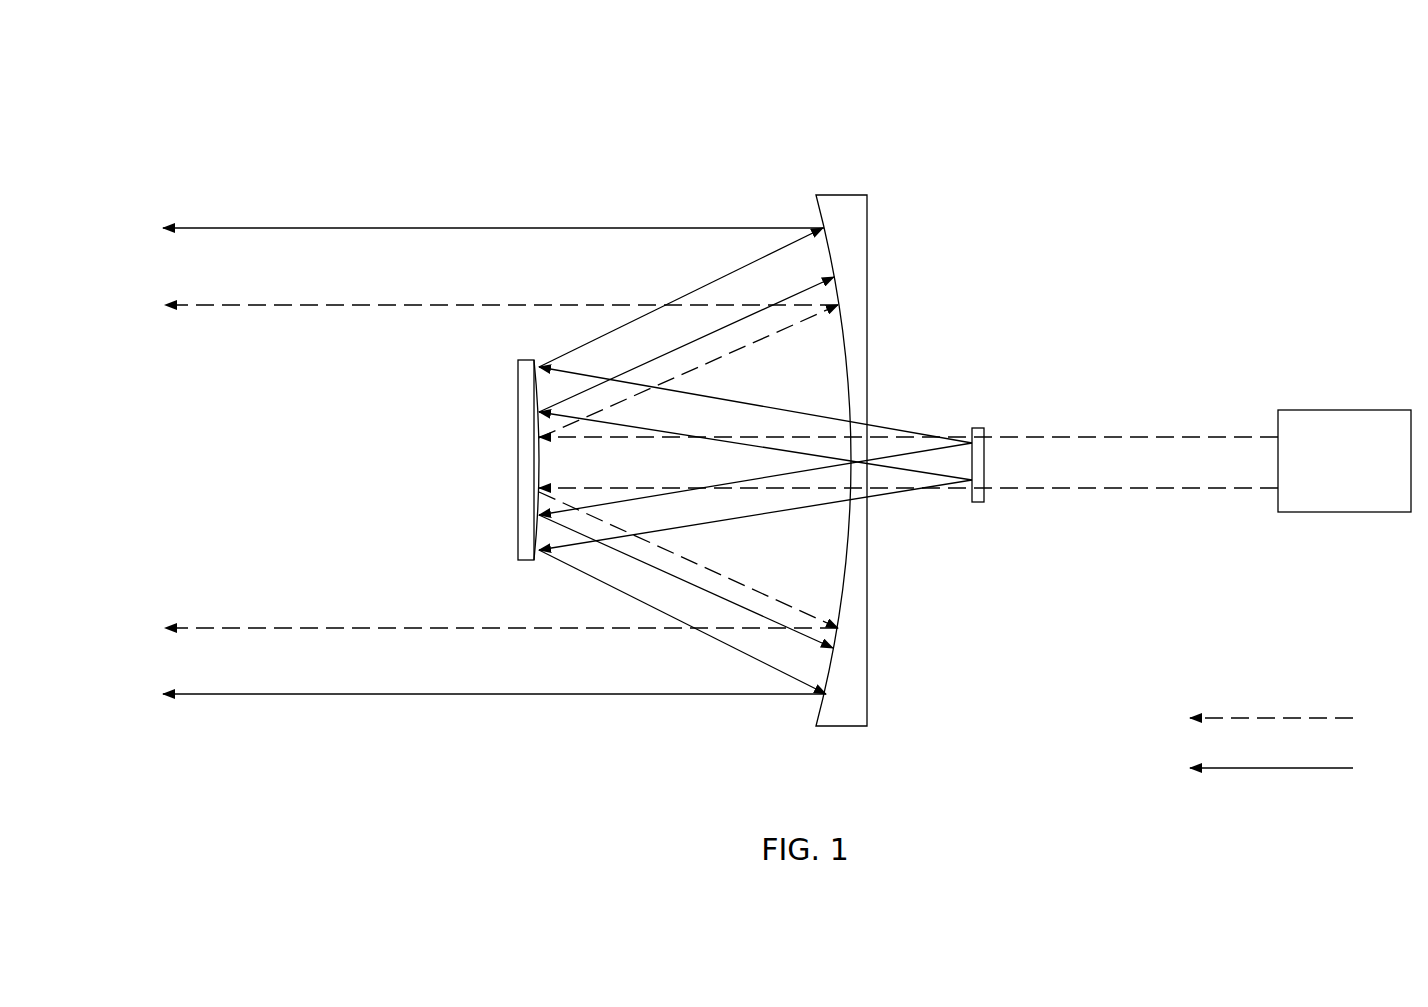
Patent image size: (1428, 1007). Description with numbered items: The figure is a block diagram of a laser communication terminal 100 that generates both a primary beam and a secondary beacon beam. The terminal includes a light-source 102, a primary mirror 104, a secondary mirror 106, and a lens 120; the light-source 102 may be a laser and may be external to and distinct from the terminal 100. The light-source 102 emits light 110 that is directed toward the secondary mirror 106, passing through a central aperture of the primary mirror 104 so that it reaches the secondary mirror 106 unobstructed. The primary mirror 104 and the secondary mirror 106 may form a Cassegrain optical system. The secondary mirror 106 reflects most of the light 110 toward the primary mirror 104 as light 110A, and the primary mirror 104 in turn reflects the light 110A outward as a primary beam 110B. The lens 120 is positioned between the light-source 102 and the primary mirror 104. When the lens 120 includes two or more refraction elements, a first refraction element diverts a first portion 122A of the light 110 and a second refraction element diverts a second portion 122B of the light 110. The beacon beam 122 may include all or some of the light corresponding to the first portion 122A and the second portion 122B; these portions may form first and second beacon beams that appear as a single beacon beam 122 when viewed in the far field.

The laser communication terminal 100 is at (1023, 133).
The light-source 102 is at (1344, 410).
The primary mirror 104 is at (867, 300).
The secondary mirror 106 is at (518, 460).
The light 110 is at (1058, 437).
The light reflected by secondary mirror 110A is at (742, 350).
The primary beam 110B is at (278, 305).
The lens 120 is at (978, 428).
The beacon beam 122 is at (362, 228).
The first portion of the light 122A is at (568, 354).
The second portion of the light 122B is at (630, 424).